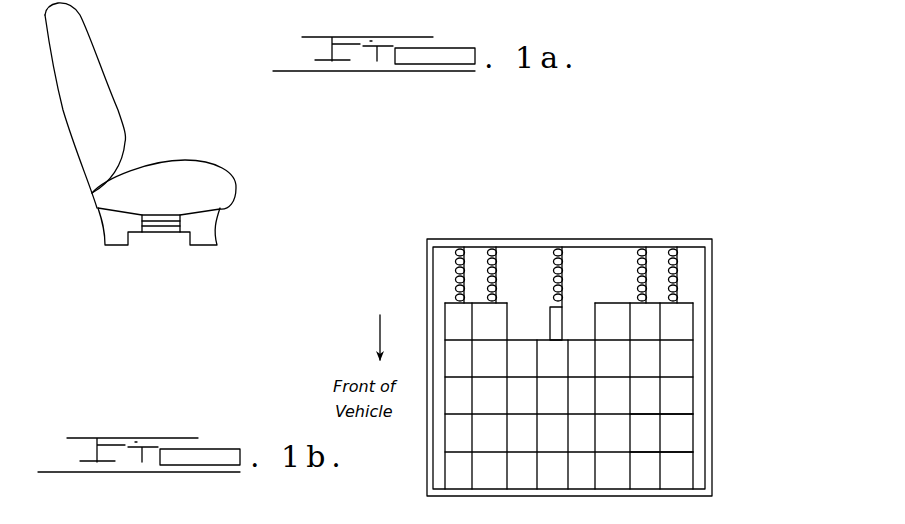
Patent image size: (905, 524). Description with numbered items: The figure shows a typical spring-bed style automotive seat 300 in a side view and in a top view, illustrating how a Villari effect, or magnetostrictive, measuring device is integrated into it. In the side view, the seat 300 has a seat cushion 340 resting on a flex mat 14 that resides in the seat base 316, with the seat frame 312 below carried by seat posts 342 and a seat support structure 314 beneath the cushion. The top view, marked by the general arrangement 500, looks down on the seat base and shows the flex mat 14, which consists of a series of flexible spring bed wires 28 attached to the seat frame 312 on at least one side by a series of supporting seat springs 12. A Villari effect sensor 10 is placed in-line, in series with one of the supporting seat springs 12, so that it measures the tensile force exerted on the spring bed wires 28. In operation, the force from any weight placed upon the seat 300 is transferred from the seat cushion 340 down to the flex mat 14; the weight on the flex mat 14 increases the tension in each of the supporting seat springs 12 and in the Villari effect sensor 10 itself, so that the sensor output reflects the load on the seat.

In FIG. 1A, the seat 300 is at (141, 62).
In FIG. 1A, the seat cushion 340 is at (217, 163).
In FIG. 1A, the seat base 316 is at (308, 195).
In FIG. 1A, the seat frame 312 is at (222, 222).
In FIG. 1B, the seat frame 312 is at (719, 287).
In FIG. 1A, the seat posts 342 is at (100, 235).
In FIG. 1A, the flex mat 14 is at (154, 230).
In FIG. 1B, the flex mat 14 is at (672, 363).
In FIG. 1A, the seat support structure 314 is at (190, 234).
In FIG. 1B, the seat cushion assembly with sensor 500 is at (721, 224).
In FIG. 1B, the Villari effect sensor 10 is at (538, 297).
In FIG. 1B, the supporting seat springs 12 is at (628, 270).
In FIG. 1B, the spring bed wires 28 is at (650, 455).